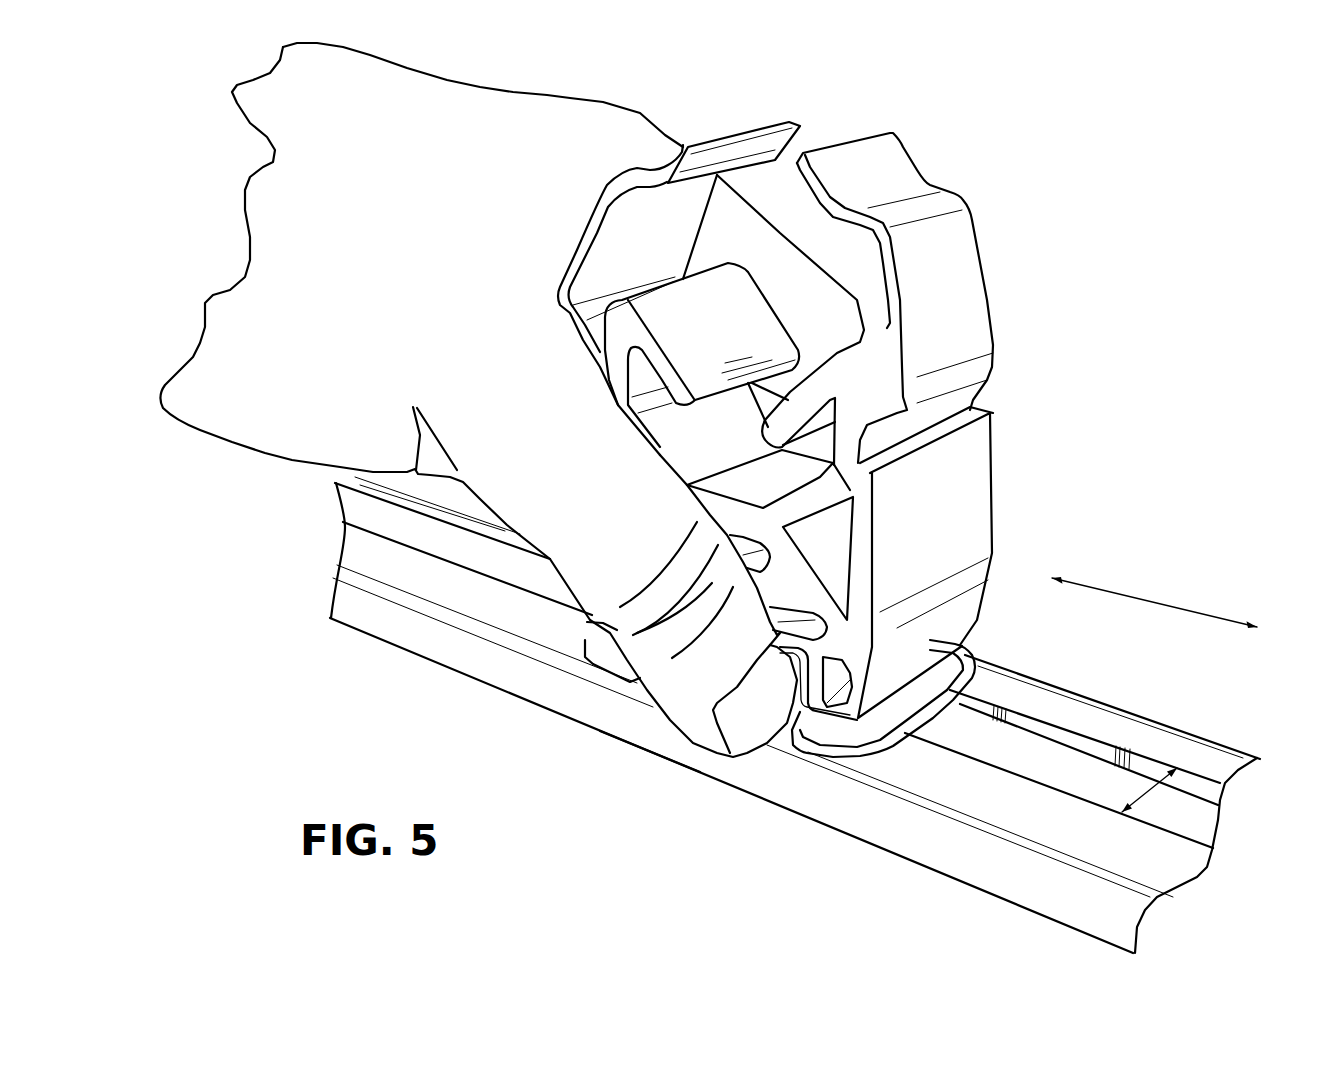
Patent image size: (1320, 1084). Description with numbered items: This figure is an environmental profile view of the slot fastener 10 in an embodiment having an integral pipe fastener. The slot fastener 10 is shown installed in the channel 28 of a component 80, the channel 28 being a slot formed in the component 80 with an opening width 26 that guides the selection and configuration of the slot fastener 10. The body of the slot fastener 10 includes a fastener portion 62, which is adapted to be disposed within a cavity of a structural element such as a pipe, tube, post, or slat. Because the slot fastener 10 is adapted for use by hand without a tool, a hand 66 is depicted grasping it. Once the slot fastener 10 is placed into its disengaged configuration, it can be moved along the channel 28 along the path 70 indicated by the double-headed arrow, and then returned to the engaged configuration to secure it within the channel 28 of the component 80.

The slot fastener 10 is at (715, 817).
The opening width 26 is at (1173, 777).
The channel 28 is at (1047, 763).
The fastener portion 62 is at (1025, 423).
The hand 66 is at (265, 397).
The path 70 is at (1130, 593).
The component 80 is at (977, 860).